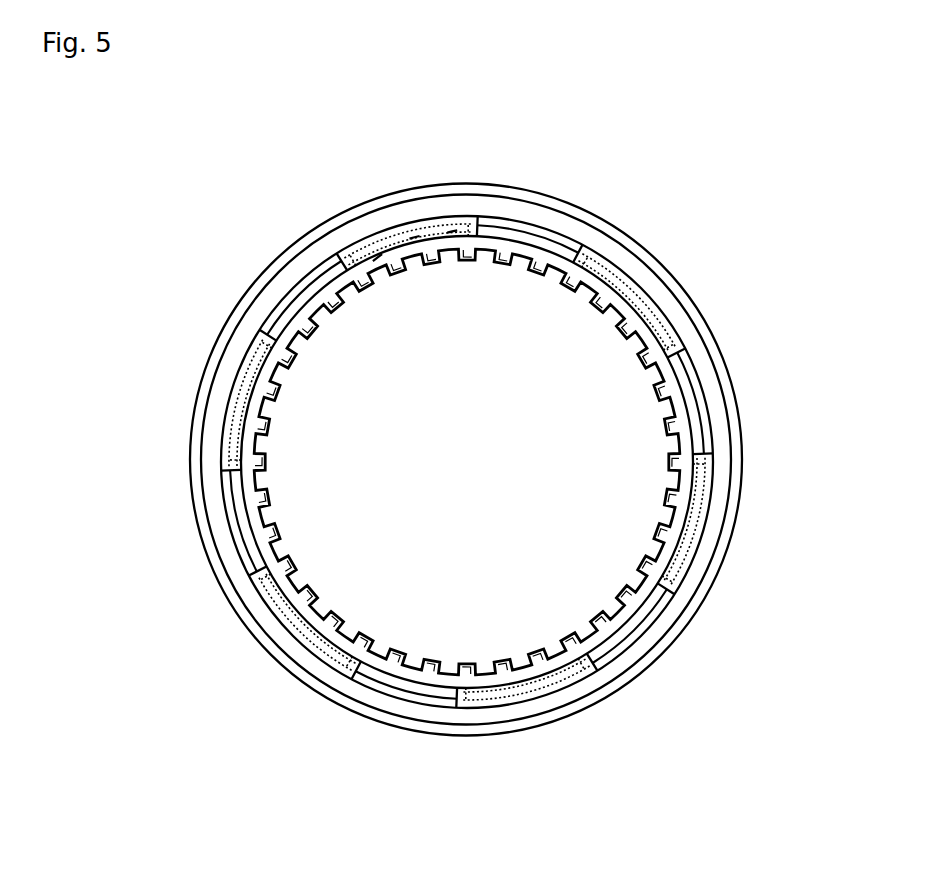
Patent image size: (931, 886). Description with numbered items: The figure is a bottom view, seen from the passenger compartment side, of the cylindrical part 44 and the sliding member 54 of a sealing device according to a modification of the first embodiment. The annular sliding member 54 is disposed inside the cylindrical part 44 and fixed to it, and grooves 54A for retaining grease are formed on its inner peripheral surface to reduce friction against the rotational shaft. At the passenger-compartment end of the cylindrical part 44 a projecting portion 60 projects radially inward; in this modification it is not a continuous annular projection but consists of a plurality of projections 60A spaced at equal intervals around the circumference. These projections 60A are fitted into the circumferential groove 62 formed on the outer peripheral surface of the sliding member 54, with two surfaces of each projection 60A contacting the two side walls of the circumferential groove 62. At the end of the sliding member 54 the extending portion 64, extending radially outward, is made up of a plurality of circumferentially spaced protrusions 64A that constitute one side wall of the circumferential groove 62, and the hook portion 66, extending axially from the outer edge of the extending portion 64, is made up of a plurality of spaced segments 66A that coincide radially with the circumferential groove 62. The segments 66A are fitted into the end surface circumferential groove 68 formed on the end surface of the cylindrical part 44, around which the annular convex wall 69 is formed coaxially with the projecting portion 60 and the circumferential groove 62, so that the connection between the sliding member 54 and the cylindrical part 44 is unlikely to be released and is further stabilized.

The cylindrical part 44 is at (243, 293).
The annular convex wall 69 is at (238, 345).
The end surface circumferential groove 68 is at (221, 504).
The sliding member 54 is at (232, 413).
The grooves 54A is at (485, 252).
The circumferential groove 62 is at (262, 399).
The projecting portion 60 is at (467, 462).
The projections 60A is at (626, 333).
The extending portion 64 is at (467, 462).
The protrusions 64A is at (343, 263).
The hook portion 66 is at (467, 462).
The segments 66A is at (709, 450).